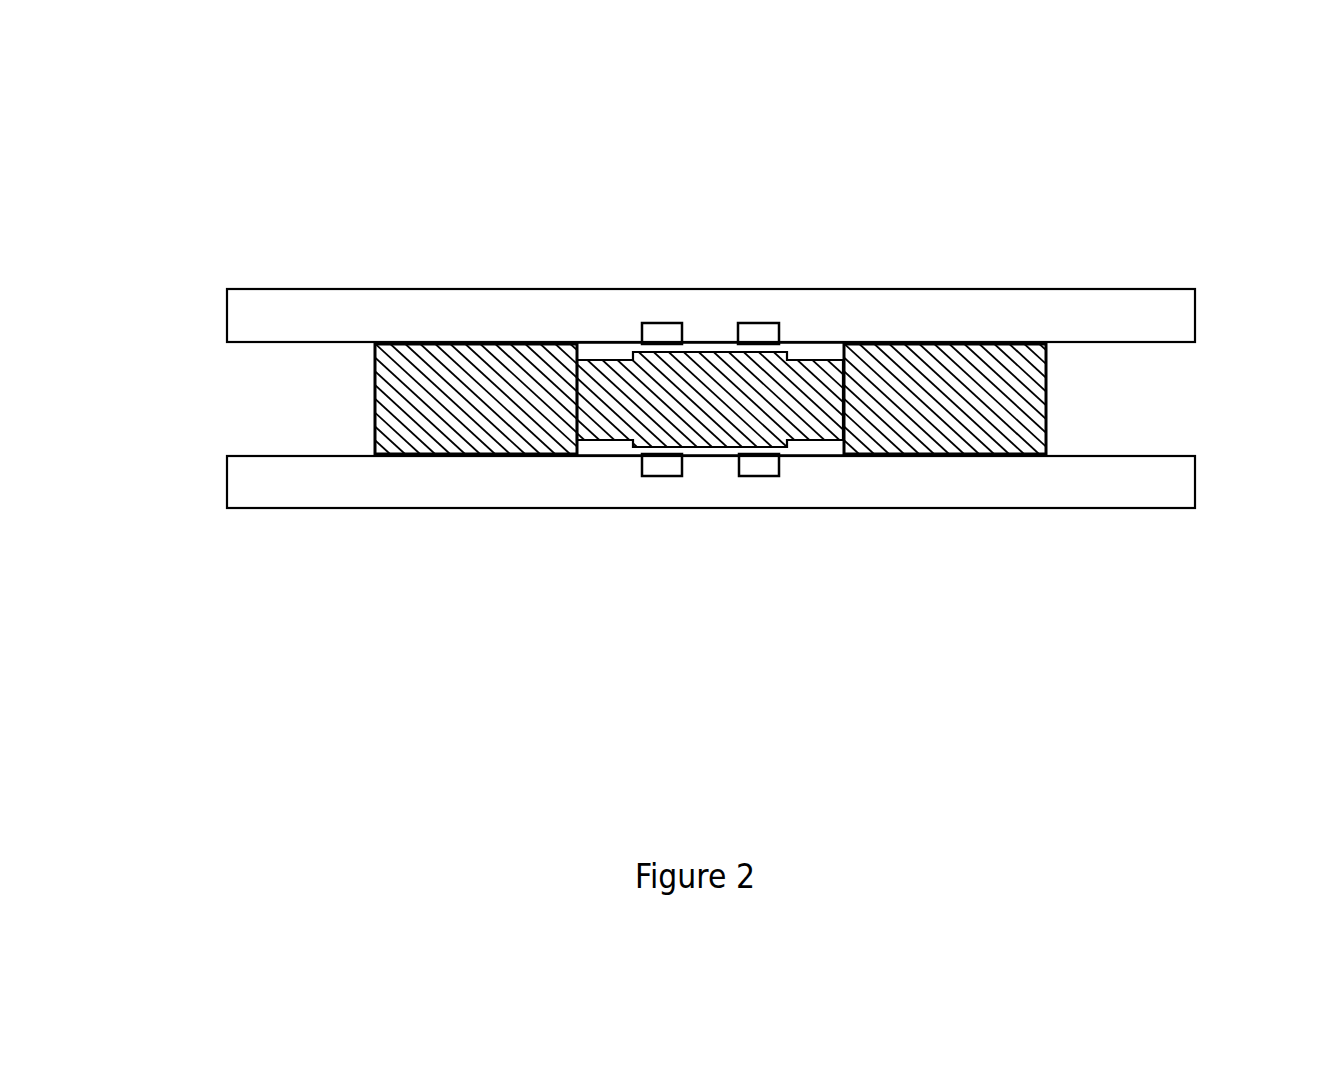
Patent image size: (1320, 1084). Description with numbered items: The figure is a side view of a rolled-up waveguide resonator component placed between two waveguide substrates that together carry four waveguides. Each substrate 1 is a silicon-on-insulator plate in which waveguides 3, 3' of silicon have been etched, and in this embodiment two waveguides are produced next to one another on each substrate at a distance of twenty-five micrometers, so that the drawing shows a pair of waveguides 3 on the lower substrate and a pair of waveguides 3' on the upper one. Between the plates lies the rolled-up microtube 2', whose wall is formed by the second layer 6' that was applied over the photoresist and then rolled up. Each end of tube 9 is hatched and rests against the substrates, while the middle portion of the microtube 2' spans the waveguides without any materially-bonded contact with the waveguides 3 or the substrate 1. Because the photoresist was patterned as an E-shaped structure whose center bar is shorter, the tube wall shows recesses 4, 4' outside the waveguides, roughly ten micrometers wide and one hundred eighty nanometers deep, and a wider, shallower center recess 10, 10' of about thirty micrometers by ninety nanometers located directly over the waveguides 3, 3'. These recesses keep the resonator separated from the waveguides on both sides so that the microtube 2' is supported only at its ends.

The substrate 1 is at (1005, 313).
The end of tube 9 is at (470, 457).
The rolled-up microtube 2' is at (874, 399).
The recess 4' is at (759, 223).
The recess 4 is at (742, 537).
The center recess 10' is at (741, 224).
The center recess 10 is at (737, 561).
The waveguide 3' is at (757, 259).
The waveguide 3 is at (752, 543).
The second layer 6' is at (221, 399).